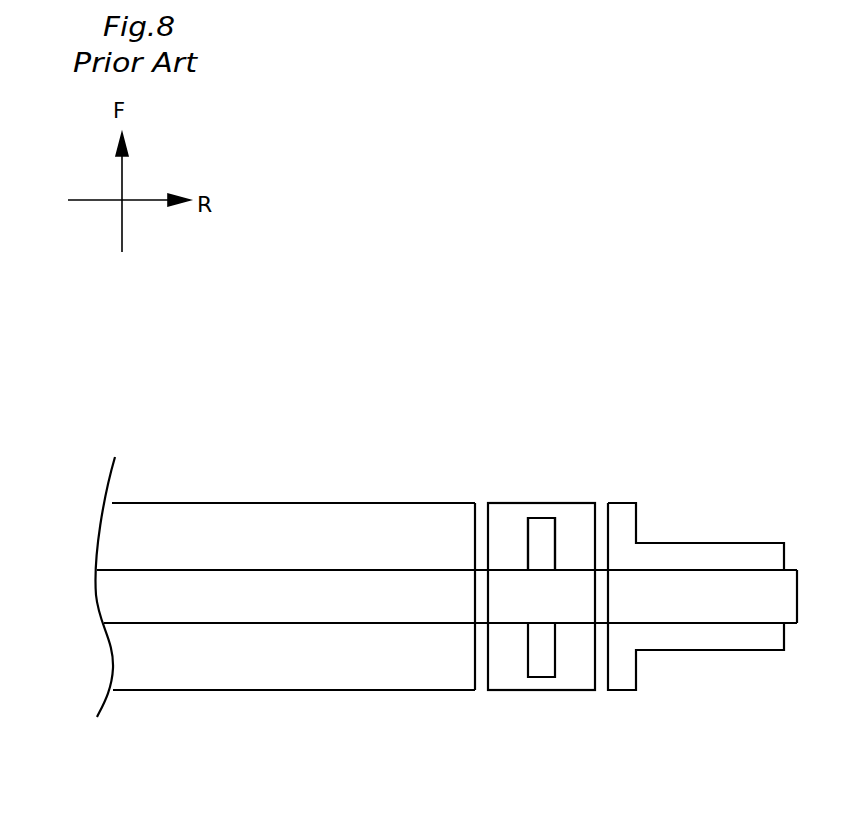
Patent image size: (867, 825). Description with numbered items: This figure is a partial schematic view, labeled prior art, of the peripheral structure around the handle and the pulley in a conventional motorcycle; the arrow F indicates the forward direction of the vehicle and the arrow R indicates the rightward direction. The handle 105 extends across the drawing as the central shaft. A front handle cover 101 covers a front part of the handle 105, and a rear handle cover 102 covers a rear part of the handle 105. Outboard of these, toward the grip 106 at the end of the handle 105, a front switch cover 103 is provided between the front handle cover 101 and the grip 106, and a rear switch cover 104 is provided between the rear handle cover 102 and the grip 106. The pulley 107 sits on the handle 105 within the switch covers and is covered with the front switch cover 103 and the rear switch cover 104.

The front handle cover 101 is at (277, 502).
The rear handle cover 102 is at (230, 690).
The front switch cover 103 is at (568, 503).
The rear switch cover 104 is at (548, 690).
The handle 105 is at (387, 592).
The grip 106 is at (628, 528).
The pulley 107 is at (545, 548).